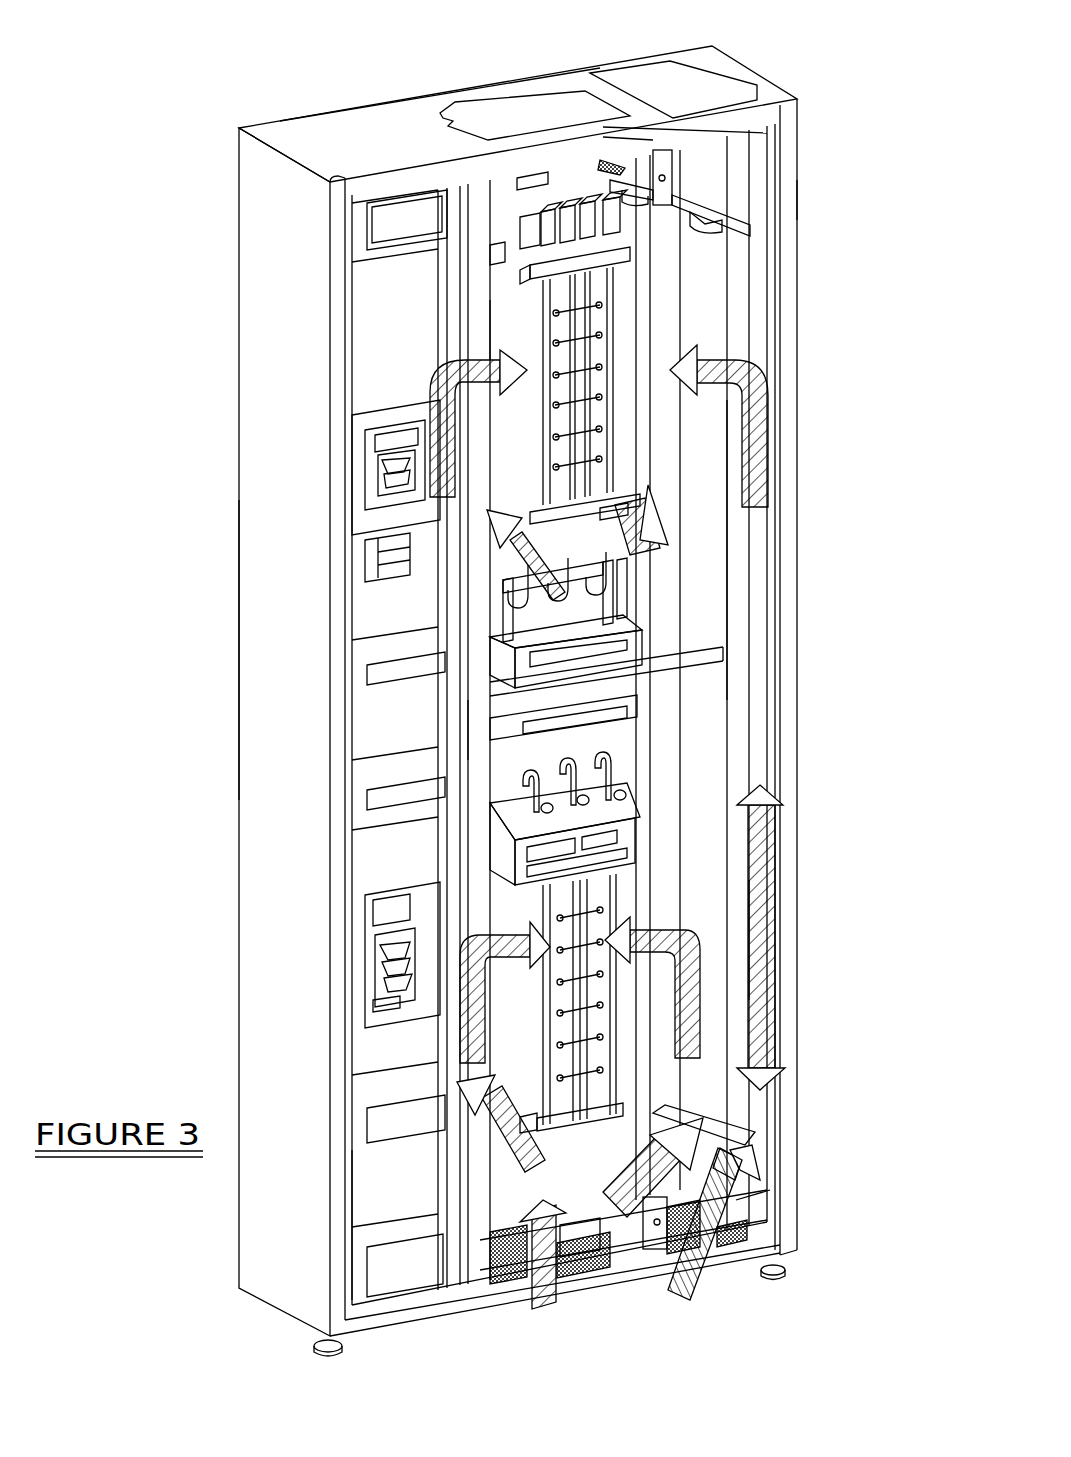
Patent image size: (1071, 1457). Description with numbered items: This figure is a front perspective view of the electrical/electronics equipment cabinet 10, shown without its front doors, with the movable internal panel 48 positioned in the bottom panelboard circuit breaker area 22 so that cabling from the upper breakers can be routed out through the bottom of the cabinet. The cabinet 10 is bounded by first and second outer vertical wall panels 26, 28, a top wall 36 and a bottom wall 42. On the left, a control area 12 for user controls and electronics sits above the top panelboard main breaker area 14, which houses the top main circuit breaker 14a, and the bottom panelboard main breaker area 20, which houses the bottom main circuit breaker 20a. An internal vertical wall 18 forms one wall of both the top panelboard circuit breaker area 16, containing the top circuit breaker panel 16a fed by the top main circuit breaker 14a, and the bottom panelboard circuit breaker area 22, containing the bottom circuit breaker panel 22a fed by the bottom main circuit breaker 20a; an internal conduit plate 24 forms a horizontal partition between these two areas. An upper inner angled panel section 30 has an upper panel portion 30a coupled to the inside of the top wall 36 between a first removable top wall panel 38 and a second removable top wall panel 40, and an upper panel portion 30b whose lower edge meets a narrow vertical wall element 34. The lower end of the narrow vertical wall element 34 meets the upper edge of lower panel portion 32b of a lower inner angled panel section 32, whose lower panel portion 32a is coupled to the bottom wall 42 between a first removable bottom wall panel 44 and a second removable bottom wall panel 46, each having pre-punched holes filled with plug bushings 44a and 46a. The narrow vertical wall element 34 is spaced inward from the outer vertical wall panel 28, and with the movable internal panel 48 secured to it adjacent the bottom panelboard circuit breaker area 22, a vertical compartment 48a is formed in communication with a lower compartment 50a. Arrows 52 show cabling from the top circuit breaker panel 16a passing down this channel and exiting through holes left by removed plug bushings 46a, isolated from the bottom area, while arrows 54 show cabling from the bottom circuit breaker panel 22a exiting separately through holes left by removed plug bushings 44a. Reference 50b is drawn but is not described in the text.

The electrical/electronics equipment cabinet 10 is at (222, 120).
The control area 12 is at (380, 762).
The top panelboard main breaker area 14 is at (398, 345).
The top main circuit breaker 14a is at (372, 492).
The top panelboard circuit breaker area 16 is at (665, 305).
The top circuit breaker panel 16a is at (517, 328).
The internal vertical wall 18 is at (470, 732).
The bottom panelboard main breaker area 20 is at (380, 1125).
The bottom main circuit breaker 20a is at (395, 972).
The bottom panelboard circuit breaker area 22 is at (700, 768).
The bottom circuit breaker panel 22a is at (530, 1045).
The internal conduit plate 24 is at (650, 707).
The first outer vertical wall panel 26 is at (275, 630).
The second outer vertical wall panel 28 is at (797, 200).
The upper inner angled panel section 30 is at (608, 170).
The upper panel portion 30a is at (640, 160).
The upper panel portion 30b is at (712, 233).
The lower inner angled panel section 32 is at (636, 1290).
The lower panel portion 32a is at (592, 1270).
The lower panel portion 32b is at (700, 1128).
The narrow vertical wall element 34 is at (745, 558).
The top wall 36 is at (335, 145).
The first removable top wall panel 38 is at (485, 120).
The second removable top wall panel 40 is at (700, 88).
The bottom wall 42 is at (585, 1240).
The first removable bottom wall panel 44 is at (490, 1225).
The plug bushings 44a is at (490, 1198).
The second removable bottom wall panel 46 is at (745, 1172).
The plug bushings 46a is at (740, 1212).
The movable internal panel 48 is at (712, 905).
The vertical compartment 48a is at (762, 1112).
The lower compartment 50a is at (745, 1152).
The upper airflow outlet 50b is at (700, 163).
The arrows 52 is at (760, 412).
The arrows 54 is at (470, 942).